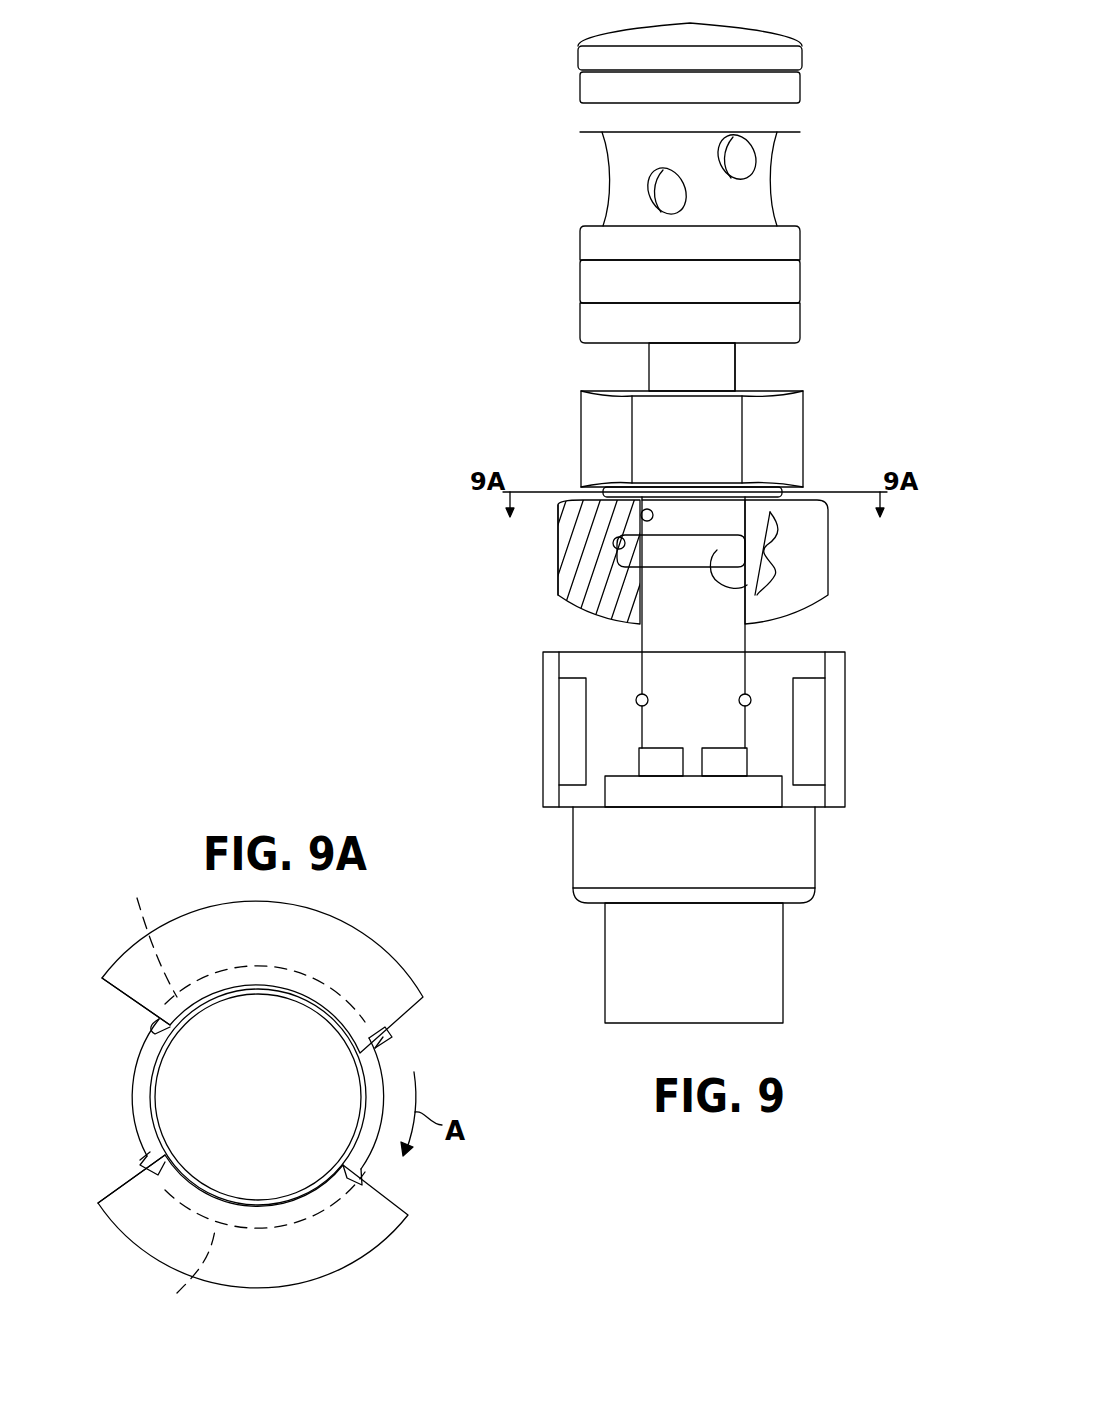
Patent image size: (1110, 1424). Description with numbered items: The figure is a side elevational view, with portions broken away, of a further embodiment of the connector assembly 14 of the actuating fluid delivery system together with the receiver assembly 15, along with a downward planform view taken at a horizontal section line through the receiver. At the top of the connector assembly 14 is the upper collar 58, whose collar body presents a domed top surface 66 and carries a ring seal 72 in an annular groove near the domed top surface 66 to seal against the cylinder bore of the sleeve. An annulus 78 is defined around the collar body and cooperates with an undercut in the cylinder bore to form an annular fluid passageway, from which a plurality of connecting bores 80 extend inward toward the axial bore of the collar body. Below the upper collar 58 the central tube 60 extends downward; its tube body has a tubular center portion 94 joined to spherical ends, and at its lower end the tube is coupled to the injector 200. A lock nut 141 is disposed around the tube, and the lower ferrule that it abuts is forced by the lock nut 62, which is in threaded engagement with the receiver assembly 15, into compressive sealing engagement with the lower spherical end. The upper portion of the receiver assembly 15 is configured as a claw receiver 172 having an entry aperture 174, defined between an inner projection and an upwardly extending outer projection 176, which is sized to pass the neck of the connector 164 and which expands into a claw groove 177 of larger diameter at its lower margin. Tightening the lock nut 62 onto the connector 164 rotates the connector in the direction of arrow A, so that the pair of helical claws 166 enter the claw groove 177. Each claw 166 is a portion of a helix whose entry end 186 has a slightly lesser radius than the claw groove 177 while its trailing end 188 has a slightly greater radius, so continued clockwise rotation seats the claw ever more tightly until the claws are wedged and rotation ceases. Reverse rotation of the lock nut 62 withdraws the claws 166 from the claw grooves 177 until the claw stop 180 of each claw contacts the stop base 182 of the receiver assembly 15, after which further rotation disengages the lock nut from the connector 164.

In FIG. 9, the connector assembly 14 is at (545, 133).
In FIG. 9, the receiver assembly 15 is at (538, 735).
In FIG. 9A, the receiver assembly 15 is at (293, 1257).
In FIG. 9, the upper collar 58 is at (595, 245).
In FIG. 9, the central tube 60 is at (680, 373).
In FIG. 9, the lock nut 62 is at (598, 492).
In FIG. 9A, the lock nut 62 is at (310, 1140).
In FIG. 9, the domed top surface 66 is at (656, 24).
In FIG. 9, the ring seal 72 is at (603, 87).
In FIG. 9, the annulus 78 is at (758, 203).
In FIG. 9, the connecting bores 80 is at (733, 158).
In FIG. 9, the tubular center portion 94 is at (735, 372).
In FIG. 9, the lock nut 141 is at (790, 438).
In FIG. 9, the connector 164 is at (703, 517).
In FIG. 9, the helical claws 166 is at (750, 592).
In FIG. 9A, the helical claws 166 is at (390, 1060).
In FIG. 9, the claw receiver 172 is at (595, 590).
In FIG. 9, the entry aperture 174 is at (640, 517).
In FIG. 9, the outer projection 176 is at (558, 573).
In FIG. 9, the claw groove 177 is at (612, 542).
In FIG. 9A, the claw groove 177 is at (132, 897).
In FIG. 9A, the claw stop 180 is at (385, 1030).
In FIG. 9, the stop base 182 is at (760, 545).
In FIG. 9A, the stop base 182 is at (407, 1012).
In FIG. 9A, the entry end 186 is at (168, 1027).
In FIG. 9A, the trailing end 188 is at (385, 1037).
In FIG. 9, the injector 200 is at (600, 945).